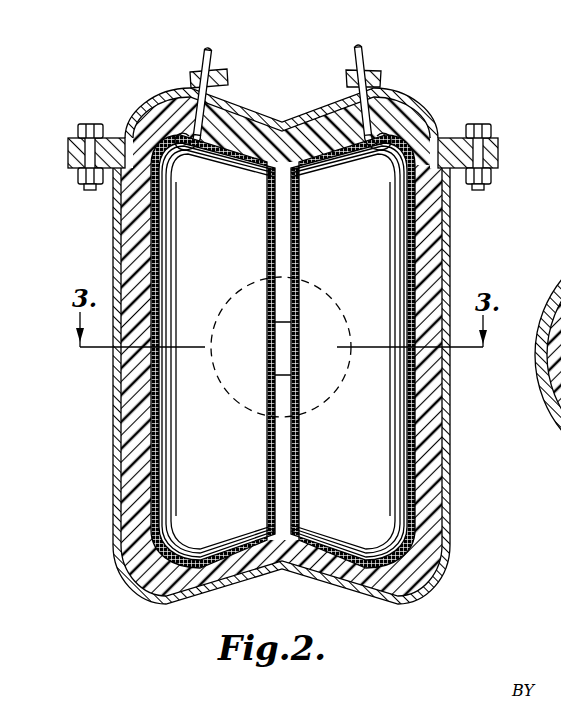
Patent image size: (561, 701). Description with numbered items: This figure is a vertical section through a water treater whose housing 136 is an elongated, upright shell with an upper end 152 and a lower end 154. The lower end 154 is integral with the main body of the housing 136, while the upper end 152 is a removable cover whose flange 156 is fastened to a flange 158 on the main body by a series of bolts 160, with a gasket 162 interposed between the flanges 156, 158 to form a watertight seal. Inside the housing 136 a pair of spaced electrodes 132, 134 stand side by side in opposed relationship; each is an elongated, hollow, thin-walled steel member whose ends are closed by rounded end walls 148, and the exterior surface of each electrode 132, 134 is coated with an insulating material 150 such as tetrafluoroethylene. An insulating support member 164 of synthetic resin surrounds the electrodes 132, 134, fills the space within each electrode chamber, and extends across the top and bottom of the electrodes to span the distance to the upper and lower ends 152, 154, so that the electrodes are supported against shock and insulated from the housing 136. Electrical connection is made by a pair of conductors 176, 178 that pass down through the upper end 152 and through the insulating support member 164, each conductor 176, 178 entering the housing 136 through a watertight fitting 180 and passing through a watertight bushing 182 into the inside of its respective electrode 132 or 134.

The electrode 132 is at (128, 505).
The electrode 134 is at (428, 521).
The housing 136 is at (105, 220).
The rounded end walls 148 is at (220, 146).
The insulating material 150 is at (115, 383).
The upper end 152 is at (414, 103).
The lower end 154 is at (405, 600).
The flange 156 is at (492, 137).
The flange 158 is at (503, 170).
The bolts 160 is at (87, 124).
The gasket 162 is at (500, 152).
The insulating support member 164 is at (137, 242).
The conductor 176 is at (212, 51).
The conductor 178 is at (362, 53).
The watertight fitting 180 is at (190, 74).
The watertight bushing 182 is at (204, 154).